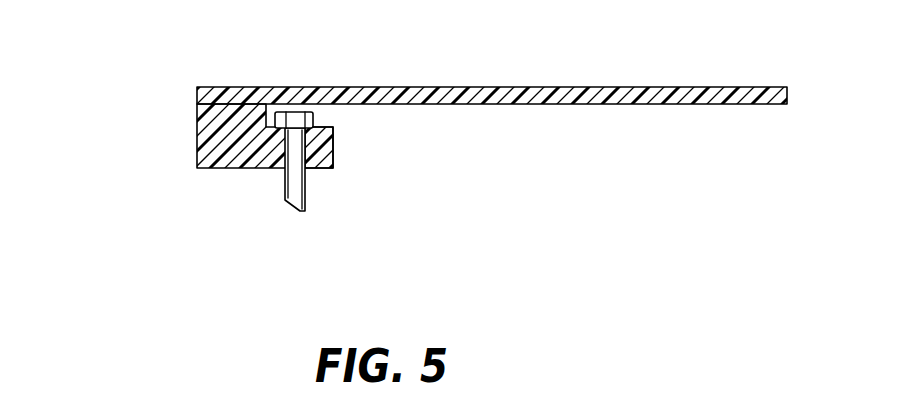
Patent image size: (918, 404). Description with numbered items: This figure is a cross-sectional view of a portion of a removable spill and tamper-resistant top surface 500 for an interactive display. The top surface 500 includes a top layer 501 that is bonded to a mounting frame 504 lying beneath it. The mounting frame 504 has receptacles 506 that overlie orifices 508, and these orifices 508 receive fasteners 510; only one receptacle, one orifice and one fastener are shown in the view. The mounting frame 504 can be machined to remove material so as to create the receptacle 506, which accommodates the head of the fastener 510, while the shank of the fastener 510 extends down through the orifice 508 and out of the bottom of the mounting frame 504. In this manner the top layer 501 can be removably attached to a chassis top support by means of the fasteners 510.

The removable spill and tamper-resistant top surface 500 is at (215, 213).
The top layer 501 is at (223, 87).
The mounting frame 504 is at (197, 138).
The receptacle 506 is at (323, 117).
The orifice 508 is at (327, 143).
The fastener 510 is at (307, 197).